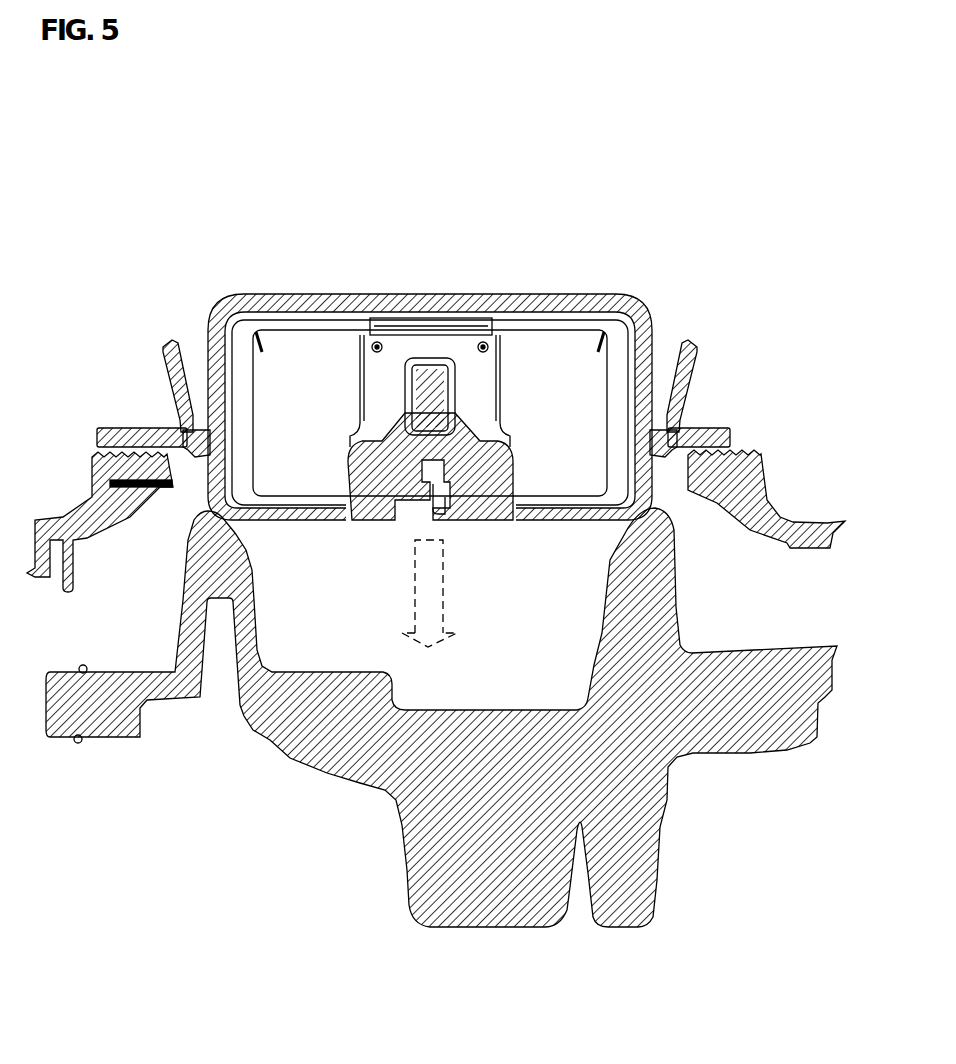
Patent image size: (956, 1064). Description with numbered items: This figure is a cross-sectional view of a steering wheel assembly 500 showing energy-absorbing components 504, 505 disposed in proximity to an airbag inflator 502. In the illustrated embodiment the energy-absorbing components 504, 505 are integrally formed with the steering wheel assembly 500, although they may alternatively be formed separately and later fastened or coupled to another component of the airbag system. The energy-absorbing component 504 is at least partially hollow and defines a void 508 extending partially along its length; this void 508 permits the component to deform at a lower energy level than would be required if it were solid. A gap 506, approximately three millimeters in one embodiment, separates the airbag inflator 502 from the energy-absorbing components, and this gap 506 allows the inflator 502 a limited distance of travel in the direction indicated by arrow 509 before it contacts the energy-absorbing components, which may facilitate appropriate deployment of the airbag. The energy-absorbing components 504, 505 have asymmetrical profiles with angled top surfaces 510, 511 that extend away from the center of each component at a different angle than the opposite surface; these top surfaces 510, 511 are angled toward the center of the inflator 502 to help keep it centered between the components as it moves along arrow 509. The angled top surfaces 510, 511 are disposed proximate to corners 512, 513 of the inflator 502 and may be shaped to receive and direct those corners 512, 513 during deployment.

The steering wheel assembly 500 is at (151, 164).
The airbag inflator 502 is at (455, 293).
The energy-absorbing component 504 is at (253, 597).
The energy-absorbing component 505 is at (603, 598).
The gap 506 is at (266, 544).
The void 508 is at (202, 718).
The arrow 509 is at (443, 612).
The angled top surface 510 is at (263, 497).
The angled top surface 511 is at (595, 513).
The corner 512 is at (180, 522).
The corner 513 is at (673, 510).